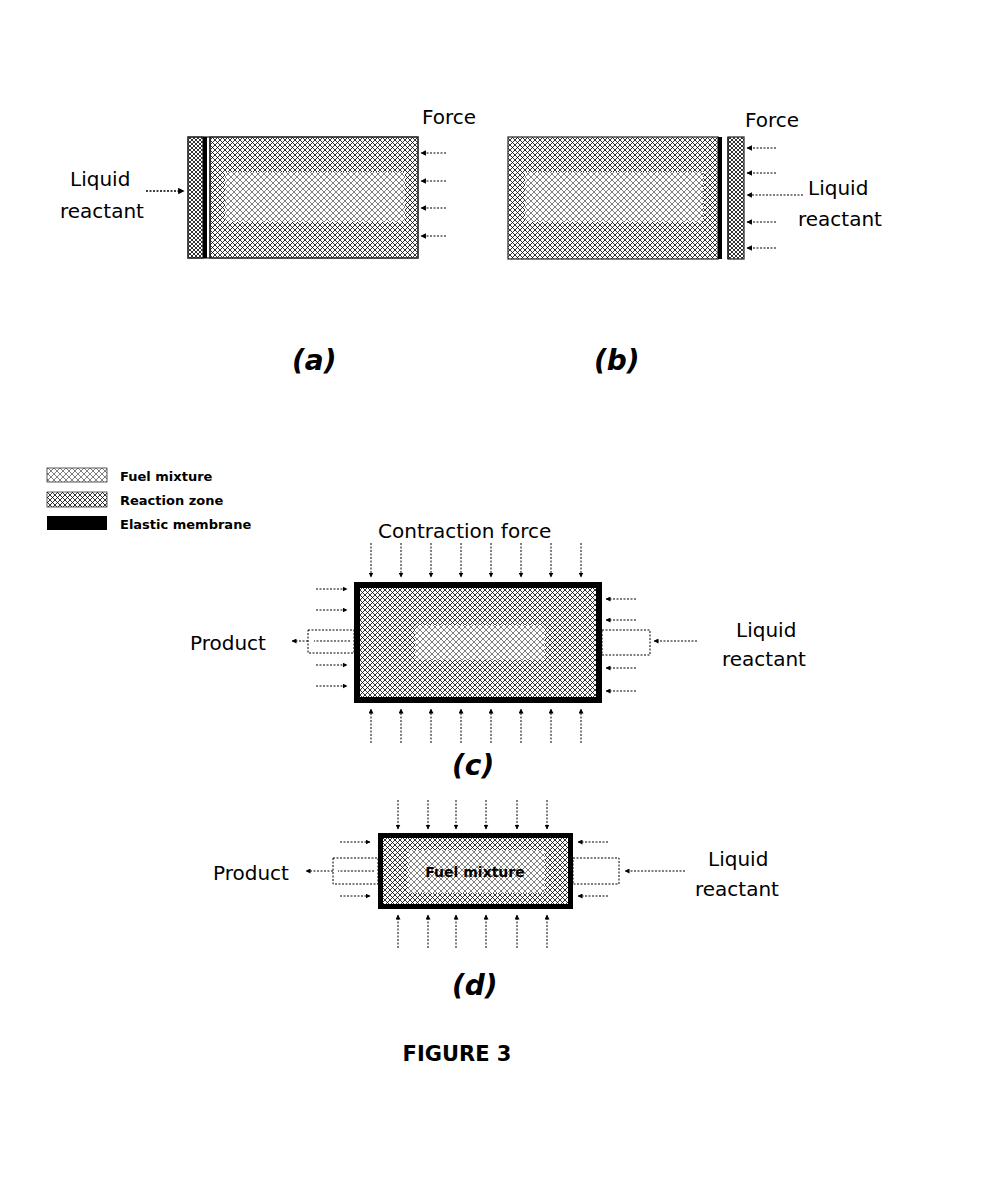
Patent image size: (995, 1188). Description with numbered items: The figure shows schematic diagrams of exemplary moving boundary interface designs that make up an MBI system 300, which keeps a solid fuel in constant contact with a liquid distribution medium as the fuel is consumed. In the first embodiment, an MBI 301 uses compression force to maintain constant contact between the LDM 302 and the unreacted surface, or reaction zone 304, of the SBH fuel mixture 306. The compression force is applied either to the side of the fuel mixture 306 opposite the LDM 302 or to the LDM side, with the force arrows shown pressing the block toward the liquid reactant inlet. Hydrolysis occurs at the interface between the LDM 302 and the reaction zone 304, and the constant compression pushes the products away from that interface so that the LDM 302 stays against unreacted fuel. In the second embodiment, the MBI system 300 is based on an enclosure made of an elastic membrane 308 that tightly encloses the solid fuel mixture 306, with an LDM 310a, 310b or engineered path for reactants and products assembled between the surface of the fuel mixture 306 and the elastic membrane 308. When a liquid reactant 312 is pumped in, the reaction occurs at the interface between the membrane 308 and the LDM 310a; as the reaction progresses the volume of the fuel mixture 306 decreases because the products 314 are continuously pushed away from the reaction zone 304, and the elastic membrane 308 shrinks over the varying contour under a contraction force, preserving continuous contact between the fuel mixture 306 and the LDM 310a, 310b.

The MBI system 300 is at (116, 68).
The MBI 301 is at (213, 178).
The LDM 302 is at (190, 137).
The reaction zone 304 is at (212, 266).
The fuel mixture 306 is at (285, 137).
The elastic membrane 308 is at (600, 582).
The LDM 310a is at (637, 655).
The LDM 310b is at (323, 655).
The liquid reactant 312 is at (698, 640).
The products 314 is at (306, 630).